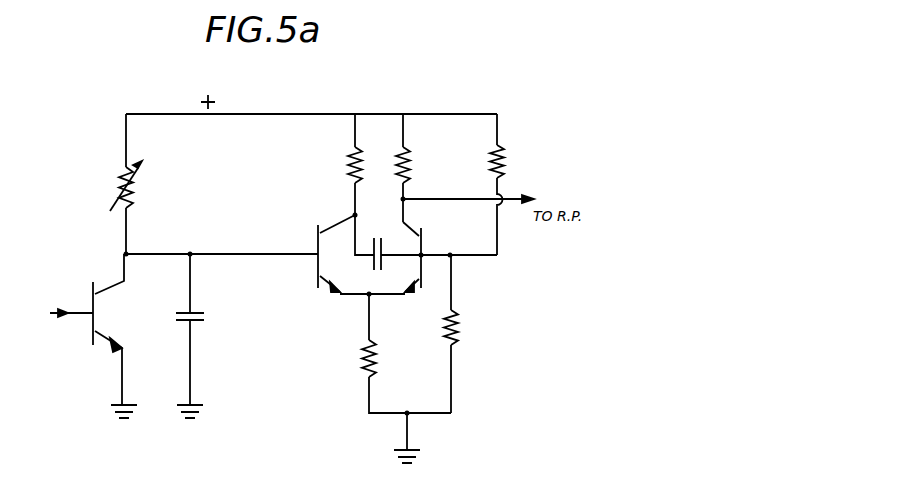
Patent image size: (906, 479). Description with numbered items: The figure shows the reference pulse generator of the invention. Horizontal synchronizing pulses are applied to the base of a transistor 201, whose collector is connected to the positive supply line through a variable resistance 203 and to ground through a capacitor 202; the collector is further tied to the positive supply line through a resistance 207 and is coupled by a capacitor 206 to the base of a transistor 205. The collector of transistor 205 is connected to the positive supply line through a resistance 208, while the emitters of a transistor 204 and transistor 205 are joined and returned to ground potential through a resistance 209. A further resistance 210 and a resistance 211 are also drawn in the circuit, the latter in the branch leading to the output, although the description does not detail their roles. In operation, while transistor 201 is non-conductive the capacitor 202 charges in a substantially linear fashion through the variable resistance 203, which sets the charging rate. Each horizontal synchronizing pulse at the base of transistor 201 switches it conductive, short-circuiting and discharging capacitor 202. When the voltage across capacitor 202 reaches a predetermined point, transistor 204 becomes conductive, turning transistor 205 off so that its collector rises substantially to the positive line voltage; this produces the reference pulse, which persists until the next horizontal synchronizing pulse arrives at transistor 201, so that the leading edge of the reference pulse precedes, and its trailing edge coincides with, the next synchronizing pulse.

The transistor 201 is at (93, 330).
The capacitor 202 is at (201, 318).
The variable resistance 203 is at (121, 185).
The transistor 204 is at (316, 276).
The transistor 205 is at (424, 246).
The capacitor 206 is at (393, 212).
The resistance 207 is at (352, 166).
The resistance 208 is at (410, 165).
The resistance 209 is at (365, 365).
The resistor 210 is at (456, 328).
The resistor 211 is at (502, 153).